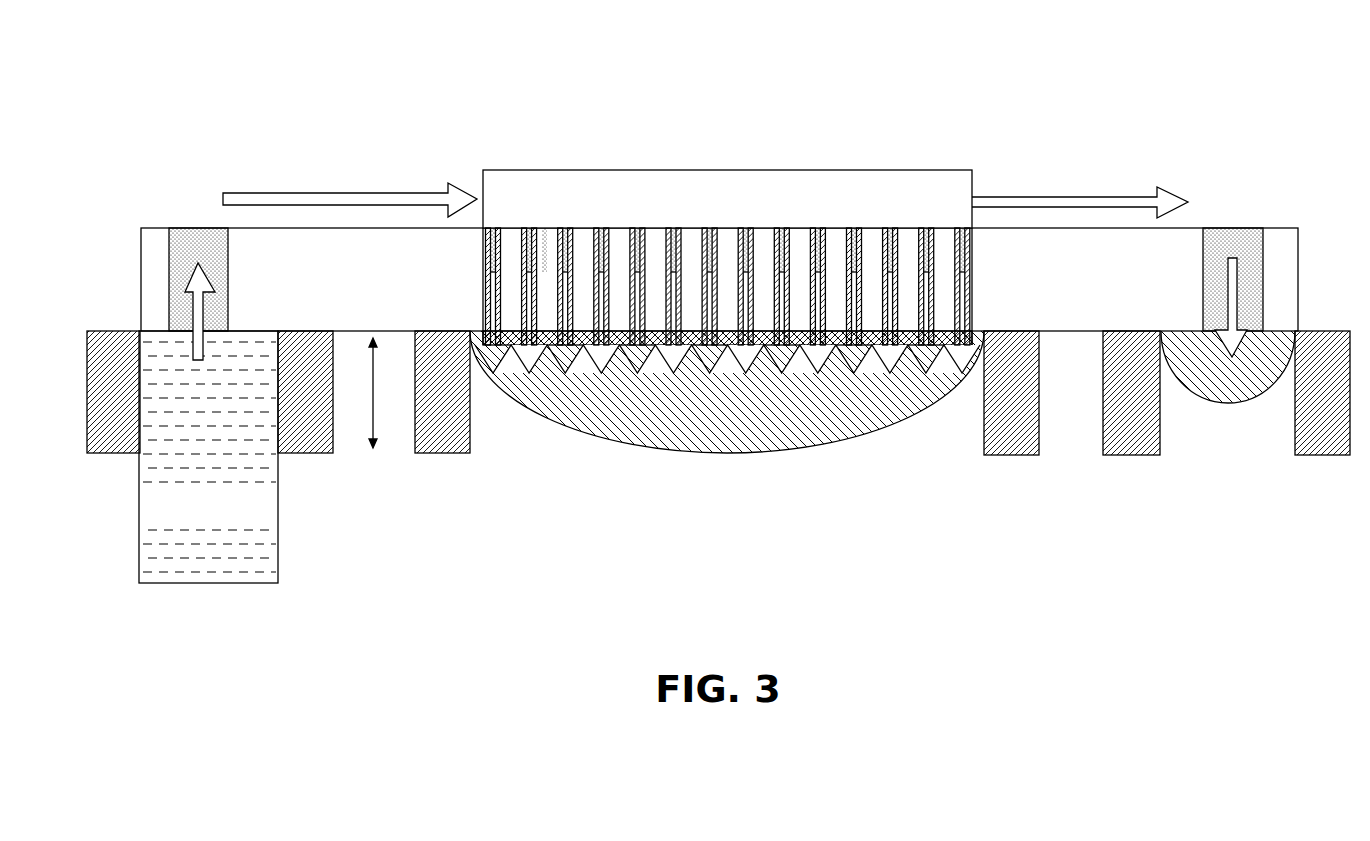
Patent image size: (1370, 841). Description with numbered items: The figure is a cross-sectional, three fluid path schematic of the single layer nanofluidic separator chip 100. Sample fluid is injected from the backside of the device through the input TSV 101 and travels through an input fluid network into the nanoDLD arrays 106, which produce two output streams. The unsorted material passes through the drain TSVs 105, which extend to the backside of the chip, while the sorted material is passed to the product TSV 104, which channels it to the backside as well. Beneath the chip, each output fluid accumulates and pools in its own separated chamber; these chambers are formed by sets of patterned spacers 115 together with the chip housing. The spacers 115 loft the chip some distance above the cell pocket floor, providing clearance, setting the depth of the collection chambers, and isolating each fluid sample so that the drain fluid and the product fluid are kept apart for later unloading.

The single layer nanofluidic separator chip 100 is at (177, 108).
The input TSV 101 is at (185, 257).
The product TSV 104 is at (1245, 257).
The drain TSV 105 is at (545, 228).
The nanoDLD arrays 106 is at (727, 271).
The spacer 115 is at (440, 433).